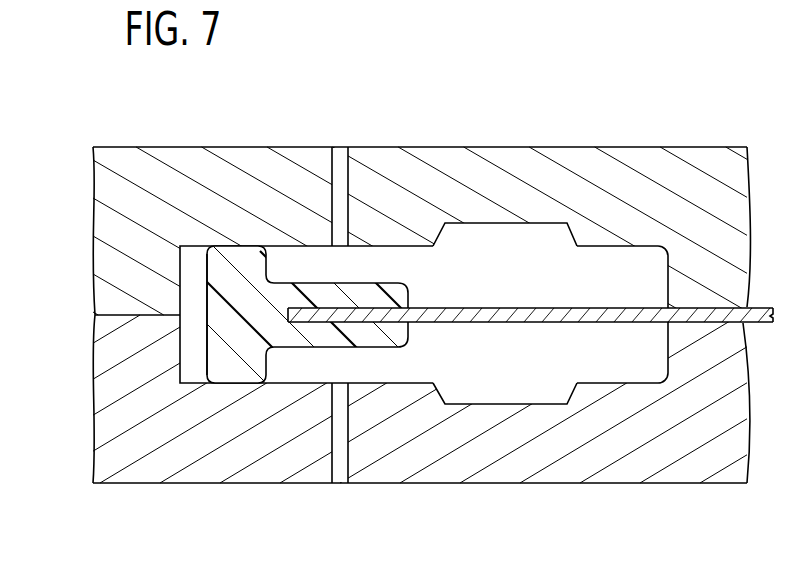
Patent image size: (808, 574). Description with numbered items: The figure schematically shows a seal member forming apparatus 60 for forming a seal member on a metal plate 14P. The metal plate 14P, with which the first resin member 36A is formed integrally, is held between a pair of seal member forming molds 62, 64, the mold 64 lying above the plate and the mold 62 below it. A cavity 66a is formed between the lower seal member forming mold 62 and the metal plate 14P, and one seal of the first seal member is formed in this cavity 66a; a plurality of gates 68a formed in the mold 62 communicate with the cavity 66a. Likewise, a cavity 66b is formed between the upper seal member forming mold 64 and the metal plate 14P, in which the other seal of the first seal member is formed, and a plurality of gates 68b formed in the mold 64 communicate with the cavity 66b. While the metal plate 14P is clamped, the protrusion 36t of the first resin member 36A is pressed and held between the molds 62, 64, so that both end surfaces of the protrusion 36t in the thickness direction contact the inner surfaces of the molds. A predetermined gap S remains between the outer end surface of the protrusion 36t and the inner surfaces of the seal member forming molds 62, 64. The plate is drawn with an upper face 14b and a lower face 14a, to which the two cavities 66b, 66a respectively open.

The seal member forming apparatus 60 is at (612, 63).
The seal member forming mold 64 is at (690, 147).
The seal member forming mold 62 is at (690, 483).
The gates 68b is at (341, 150).
The gates 68a is at (342, 478).
The cavity 66b is at (510, 233).
The cavity 66a is at (505, 395).
The gap S is at (193, 263).
The first resin member 36A is at (245, 253).
The protrusion 36t is at (215, 357).
The metal plate 14P is at (530, 318).
The upper surface of plate 14b is at (477, 307).
The lower surface of plate 14a is at (450, 323).